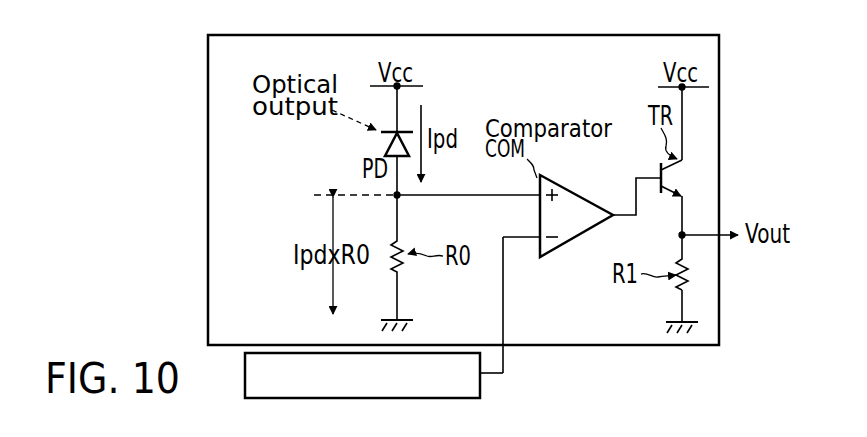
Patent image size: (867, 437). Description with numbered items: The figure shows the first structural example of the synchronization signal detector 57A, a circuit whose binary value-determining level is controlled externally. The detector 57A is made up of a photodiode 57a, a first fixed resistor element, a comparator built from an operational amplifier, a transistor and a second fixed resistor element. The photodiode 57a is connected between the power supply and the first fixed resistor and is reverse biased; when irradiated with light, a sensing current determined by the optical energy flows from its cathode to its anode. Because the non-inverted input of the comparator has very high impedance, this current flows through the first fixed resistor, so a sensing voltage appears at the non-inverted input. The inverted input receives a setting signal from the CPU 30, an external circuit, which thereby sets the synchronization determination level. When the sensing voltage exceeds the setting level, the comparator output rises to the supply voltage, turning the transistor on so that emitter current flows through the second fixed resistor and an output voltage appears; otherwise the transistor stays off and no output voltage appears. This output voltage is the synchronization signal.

The photodiode 57a is at (387, 136).
The synchronization signal detector 57A is at (719, 117).
The CPU 30 is at (480, 392).